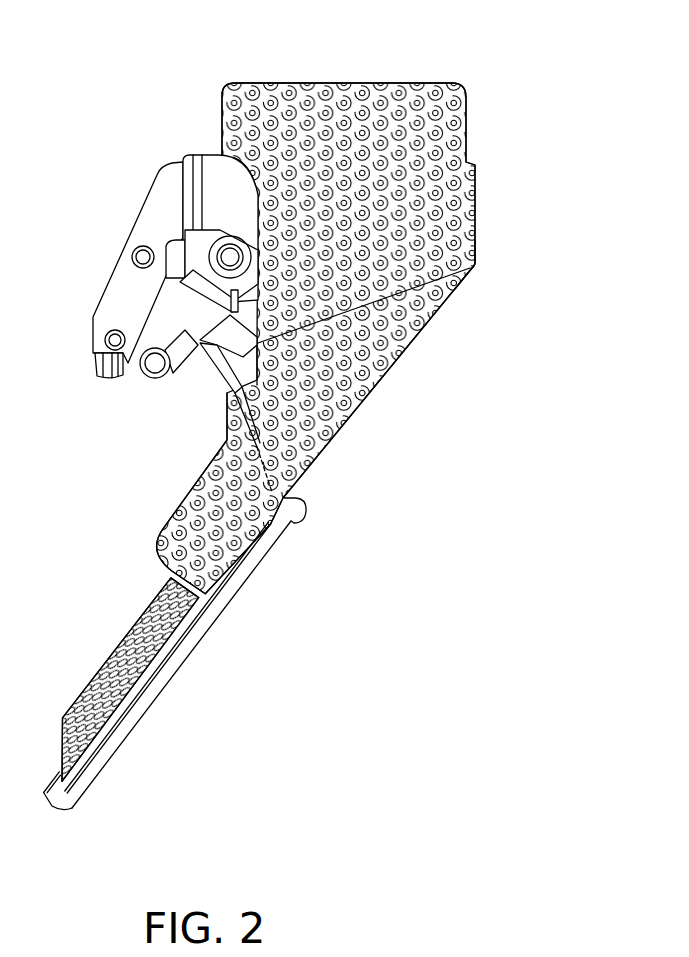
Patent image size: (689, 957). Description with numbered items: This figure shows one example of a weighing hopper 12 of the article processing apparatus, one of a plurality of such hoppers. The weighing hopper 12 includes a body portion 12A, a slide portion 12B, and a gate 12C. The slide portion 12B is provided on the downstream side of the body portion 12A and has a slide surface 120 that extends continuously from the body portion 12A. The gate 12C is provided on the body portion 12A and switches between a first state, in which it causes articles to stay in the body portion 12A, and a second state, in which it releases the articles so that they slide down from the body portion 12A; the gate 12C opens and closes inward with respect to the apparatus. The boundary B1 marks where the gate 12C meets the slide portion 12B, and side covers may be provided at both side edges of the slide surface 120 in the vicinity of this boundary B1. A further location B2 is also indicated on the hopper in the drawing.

The weighing hopper 12 is at (133, 176).
The body portion 12A is at (320, 133).
The slide portion 12B is at (100, 753).
The gate 12C is at (240, 381).
The slide surface 120 is at (100, 684).
The boundary B1 is at (282, 506).
The second boundary corner B2 is at (476, 266).